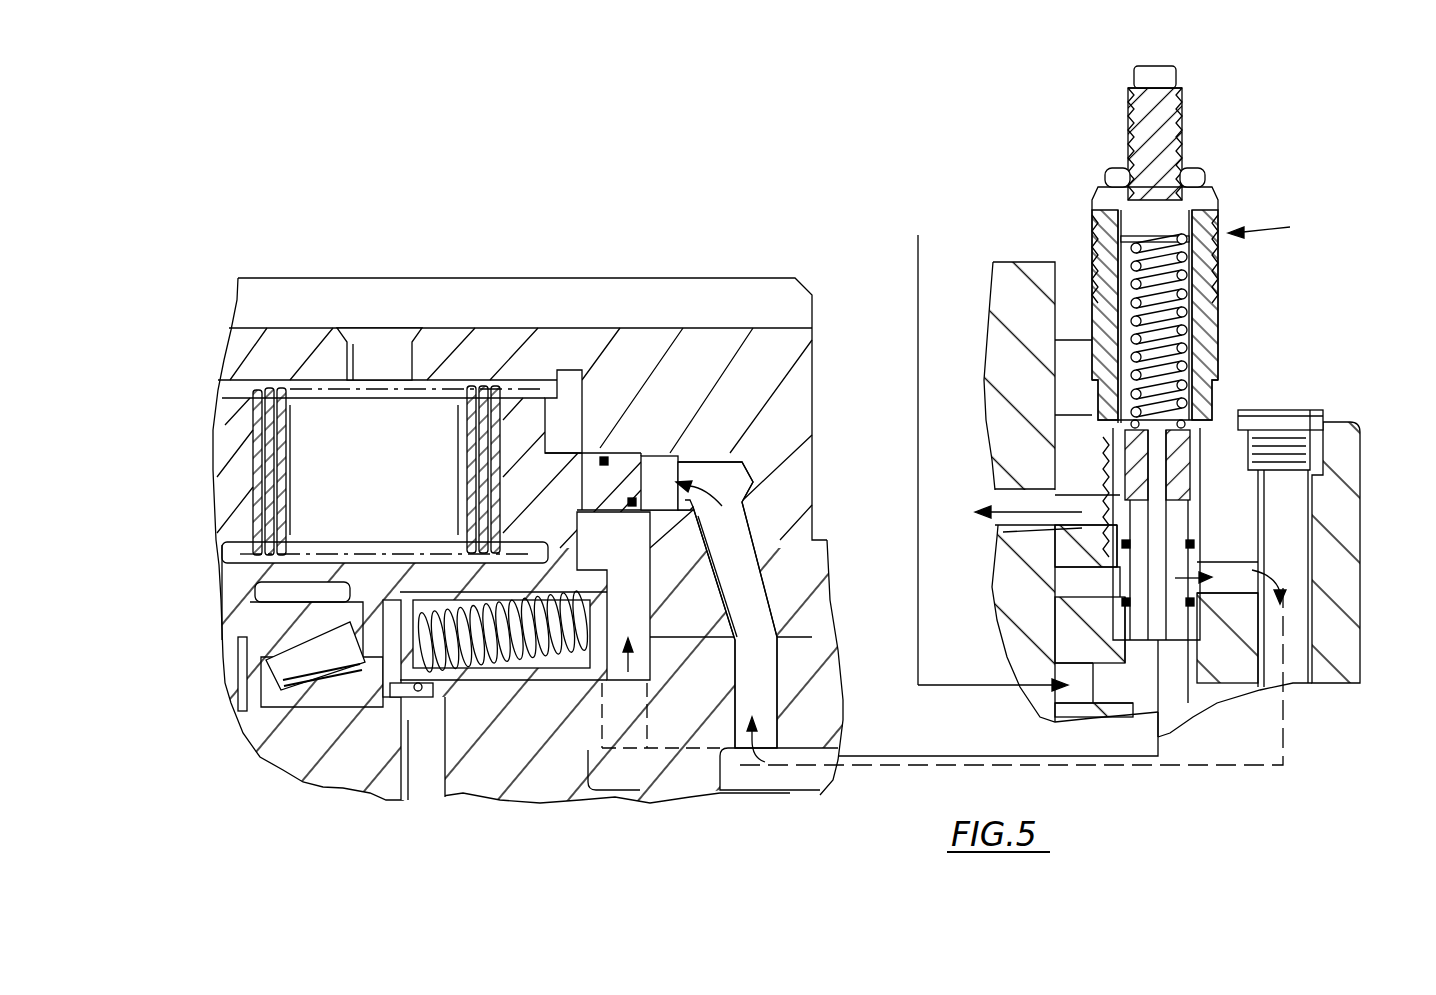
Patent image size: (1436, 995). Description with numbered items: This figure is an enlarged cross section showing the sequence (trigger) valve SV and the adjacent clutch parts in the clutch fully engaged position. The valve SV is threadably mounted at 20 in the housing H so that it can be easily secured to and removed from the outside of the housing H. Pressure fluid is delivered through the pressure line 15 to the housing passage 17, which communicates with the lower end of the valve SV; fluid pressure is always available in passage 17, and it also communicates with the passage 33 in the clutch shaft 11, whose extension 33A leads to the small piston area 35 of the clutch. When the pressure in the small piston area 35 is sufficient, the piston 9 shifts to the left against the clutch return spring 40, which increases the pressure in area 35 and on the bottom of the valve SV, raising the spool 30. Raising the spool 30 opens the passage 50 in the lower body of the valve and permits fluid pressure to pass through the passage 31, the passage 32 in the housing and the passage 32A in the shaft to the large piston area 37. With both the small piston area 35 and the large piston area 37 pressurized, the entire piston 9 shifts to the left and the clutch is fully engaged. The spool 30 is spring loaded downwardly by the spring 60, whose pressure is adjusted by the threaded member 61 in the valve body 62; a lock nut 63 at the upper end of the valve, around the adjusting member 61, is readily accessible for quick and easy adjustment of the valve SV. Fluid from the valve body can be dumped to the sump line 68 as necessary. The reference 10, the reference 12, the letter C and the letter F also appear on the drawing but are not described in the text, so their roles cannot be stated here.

The piston 9 is at (578, 468).
The solenoid coil assembly 10 is at (486, 372).
The clutch shaft 11 is at (730, 800).
The housing 12 is at (798, 352).
The pressure line 15 is at (918, 402).
The housing passage 17 is at (1173, 688).
The threaded mounting 20 is at (1207, 457).
The spool 30 is at (1160, 520).
The passage 31 is at (1237, 592).
The passage 32 is at (1297, 598).
The passage 32A is at (637, 786).
The passage 33 is at (795, 785).
The extension of passage 33 33A is at (775, 681).
The small piston area 35 is at (677, 458).
The large piston area 37 is at (620, 607).
The clutch return spring 40 is at (480, 688).
The passage 50 is at (1198, 560).
The spring 60 is at (1180, 323).
The threaded member 61 is at (1178, 75).
The valve body 62 is at (1098, 192).
The lock nut 63 is at (1207, 168).
The sump line 68 is at (1000, 532).
The coil C is at (492, 370).
The force direction F is at (478, 222).
The housing H is at (1040, 233).
The sequence valve SV is at (1179, 237).